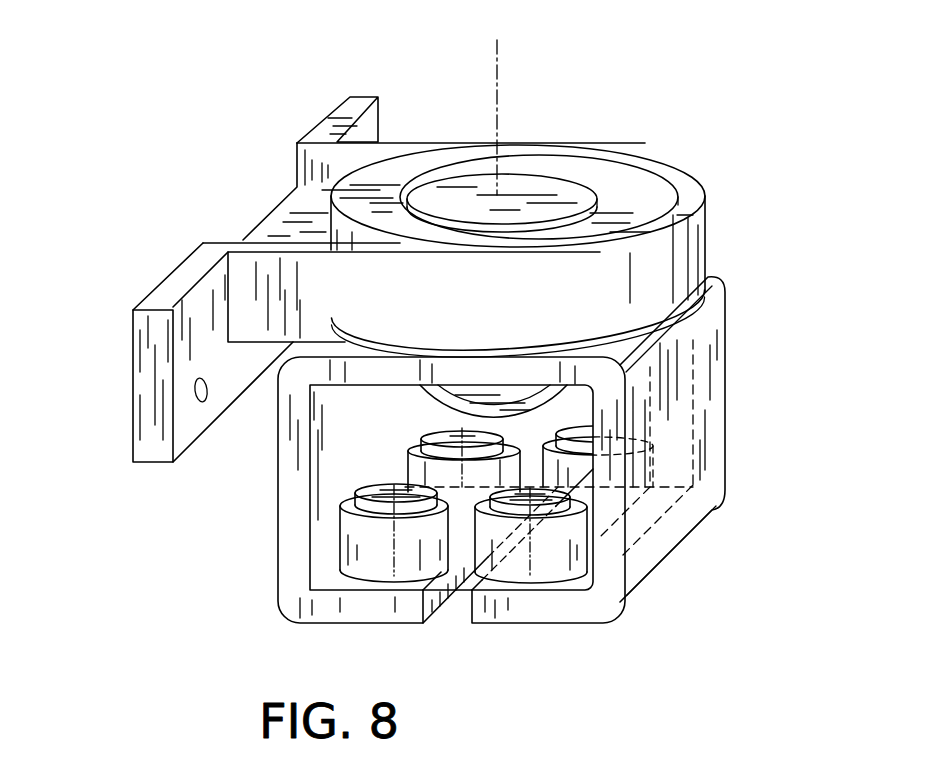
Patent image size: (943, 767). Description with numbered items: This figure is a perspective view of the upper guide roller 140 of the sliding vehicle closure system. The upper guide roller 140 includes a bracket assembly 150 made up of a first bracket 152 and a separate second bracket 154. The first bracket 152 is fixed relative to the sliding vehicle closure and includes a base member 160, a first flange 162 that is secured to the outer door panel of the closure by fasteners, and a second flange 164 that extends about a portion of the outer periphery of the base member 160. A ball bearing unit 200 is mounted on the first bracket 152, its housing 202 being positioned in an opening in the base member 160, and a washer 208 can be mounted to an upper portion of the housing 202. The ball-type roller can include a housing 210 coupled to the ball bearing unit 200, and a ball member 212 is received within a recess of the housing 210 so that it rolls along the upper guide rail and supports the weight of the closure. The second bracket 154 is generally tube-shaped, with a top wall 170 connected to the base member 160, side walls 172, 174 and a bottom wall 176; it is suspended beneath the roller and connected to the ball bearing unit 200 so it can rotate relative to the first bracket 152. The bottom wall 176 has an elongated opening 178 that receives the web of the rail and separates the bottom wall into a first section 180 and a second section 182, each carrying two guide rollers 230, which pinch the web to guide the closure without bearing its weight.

The upper guide roller 140 is at (227, 517).
The bracket assembly 150 is at (675, 150).
The first bracket 152 is at (692, 175).
The second bracket 154 is at (728, 368).
The base member 160 is at (303, 203).
The first flange 162 is at (142, 395).
The second flange 164 is at (637, 162).
The top wall 170 is at (368, 373).
The side wall 172 is at (673, 453).
The side wall 174 is at (285, 473).
The bottom wall 176 is at (383, 623).
The elongated opening 178 is at (462, 613).
The first section 180 is at (533, 607).
The second section 182 is at (317, 603).
The ball bearing unit 200 is at (538, 178).
The housing 202 is at (590, 346).
The washer 208 is at (402, 173).
The housing 210 is at (453, 193).
The ball member 212 is at (483, 407).
The guide rollers 230 is at (418, 474).